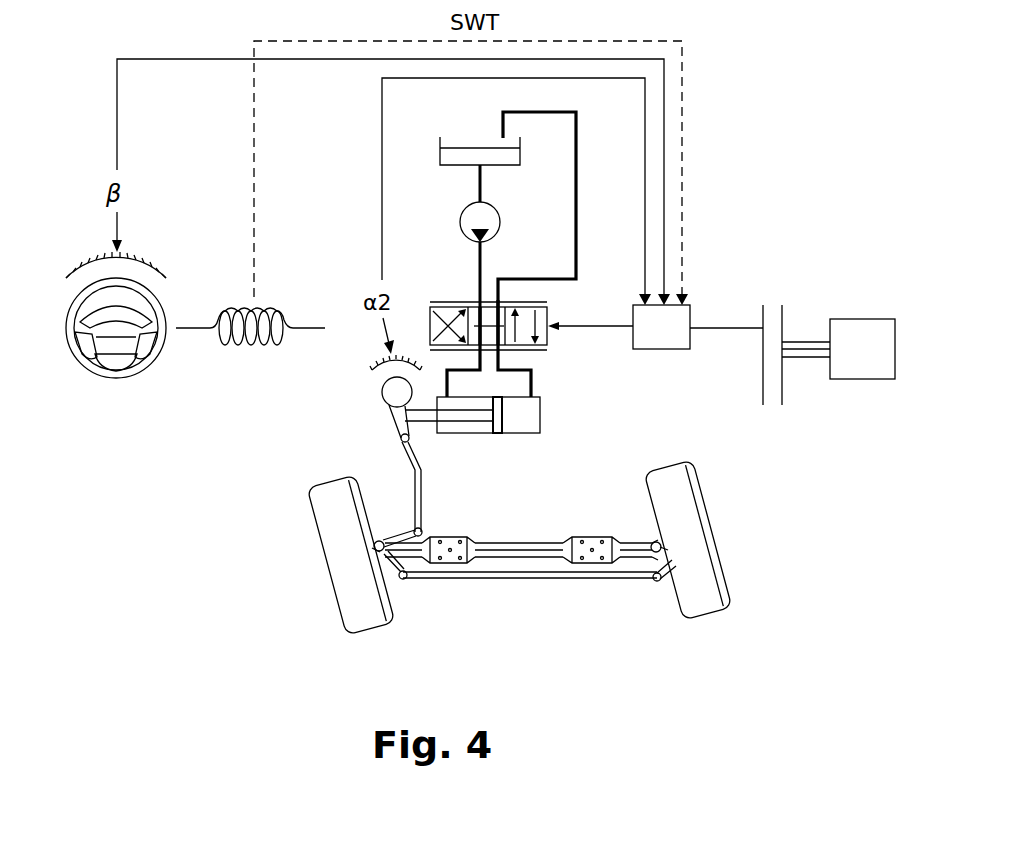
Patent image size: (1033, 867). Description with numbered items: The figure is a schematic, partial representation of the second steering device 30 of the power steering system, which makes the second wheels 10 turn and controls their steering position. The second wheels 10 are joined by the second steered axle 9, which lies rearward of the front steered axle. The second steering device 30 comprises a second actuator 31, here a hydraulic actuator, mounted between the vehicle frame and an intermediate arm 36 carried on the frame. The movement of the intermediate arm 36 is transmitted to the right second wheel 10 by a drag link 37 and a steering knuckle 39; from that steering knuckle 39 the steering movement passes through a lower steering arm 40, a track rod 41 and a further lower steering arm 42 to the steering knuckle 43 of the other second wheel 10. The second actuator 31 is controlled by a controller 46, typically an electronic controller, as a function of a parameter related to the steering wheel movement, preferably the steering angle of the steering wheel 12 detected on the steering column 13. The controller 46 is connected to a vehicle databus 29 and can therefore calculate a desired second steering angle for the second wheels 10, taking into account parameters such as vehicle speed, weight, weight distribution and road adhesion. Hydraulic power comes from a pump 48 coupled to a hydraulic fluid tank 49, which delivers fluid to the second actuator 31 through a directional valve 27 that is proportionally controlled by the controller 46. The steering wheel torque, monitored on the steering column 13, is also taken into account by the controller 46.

The steering wheel 12 is at (116, 378).
The steering column 13 is at (190, 329).
The hydraulic fluid tank 49 is at (440, 160).
The pump 48 is at (500, 216).
The directional valve 27 is at (432, 326).
The second steering device 30 is at (595, 219).
The controller 46 is at (655, 327).
The vehicle databus 29 is at (777, 380).
The second actuator 31 is at (549, 428).
The intermediate arm 36 is at (396, 418).
The drag link 37 is at (421, 498).
The steering knuckle 39 is at (378, 530).
The second steered axle 9 is at (540, 543).
The steering knuckle 43 is at (655, 536).
The further lower steering arm 42 is at (680, 575).
The lower steering arm 40 is at (383, 568).
The track rod 41 is at (545, 580).
The second wheels 10 is at (355, 597).